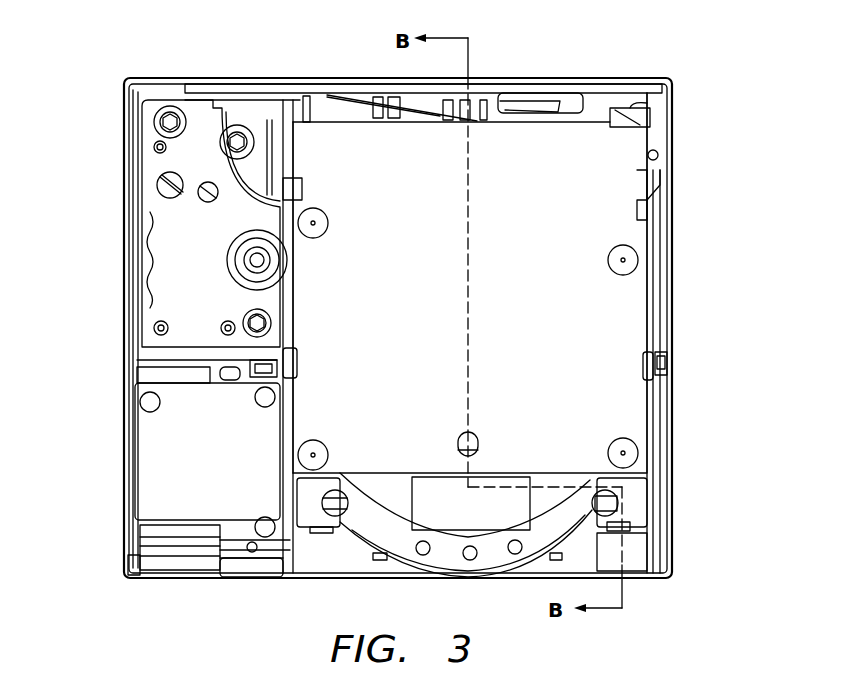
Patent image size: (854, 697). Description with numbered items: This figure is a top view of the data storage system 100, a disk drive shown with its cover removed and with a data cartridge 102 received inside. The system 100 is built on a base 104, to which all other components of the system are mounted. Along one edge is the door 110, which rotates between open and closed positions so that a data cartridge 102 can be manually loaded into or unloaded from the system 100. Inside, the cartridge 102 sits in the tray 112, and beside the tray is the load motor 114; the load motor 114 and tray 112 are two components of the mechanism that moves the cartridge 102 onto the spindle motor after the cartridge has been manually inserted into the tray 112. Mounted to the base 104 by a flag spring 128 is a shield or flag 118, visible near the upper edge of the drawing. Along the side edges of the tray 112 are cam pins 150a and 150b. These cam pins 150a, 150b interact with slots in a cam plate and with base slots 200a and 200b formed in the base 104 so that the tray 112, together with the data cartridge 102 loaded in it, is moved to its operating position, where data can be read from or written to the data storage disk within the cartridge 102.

The data storage system 100 is at (130, 38).
The data cartridge 102 is at (362, 524).
The base 104 is at (672, 143).
The door 110 is at (353, 563).
The tray 112 is at (404, 273).
The load motor 114 is at (220, 480).
The flag 118 is at (481, 123).
The flag spring 128 is at (433, 118).
The cam pin 150a is at (292, 342).
The cam pin 150b is at (653, 355).
The base slot 200a is at (262, 368).
The base slot 200b is at (672, 363).